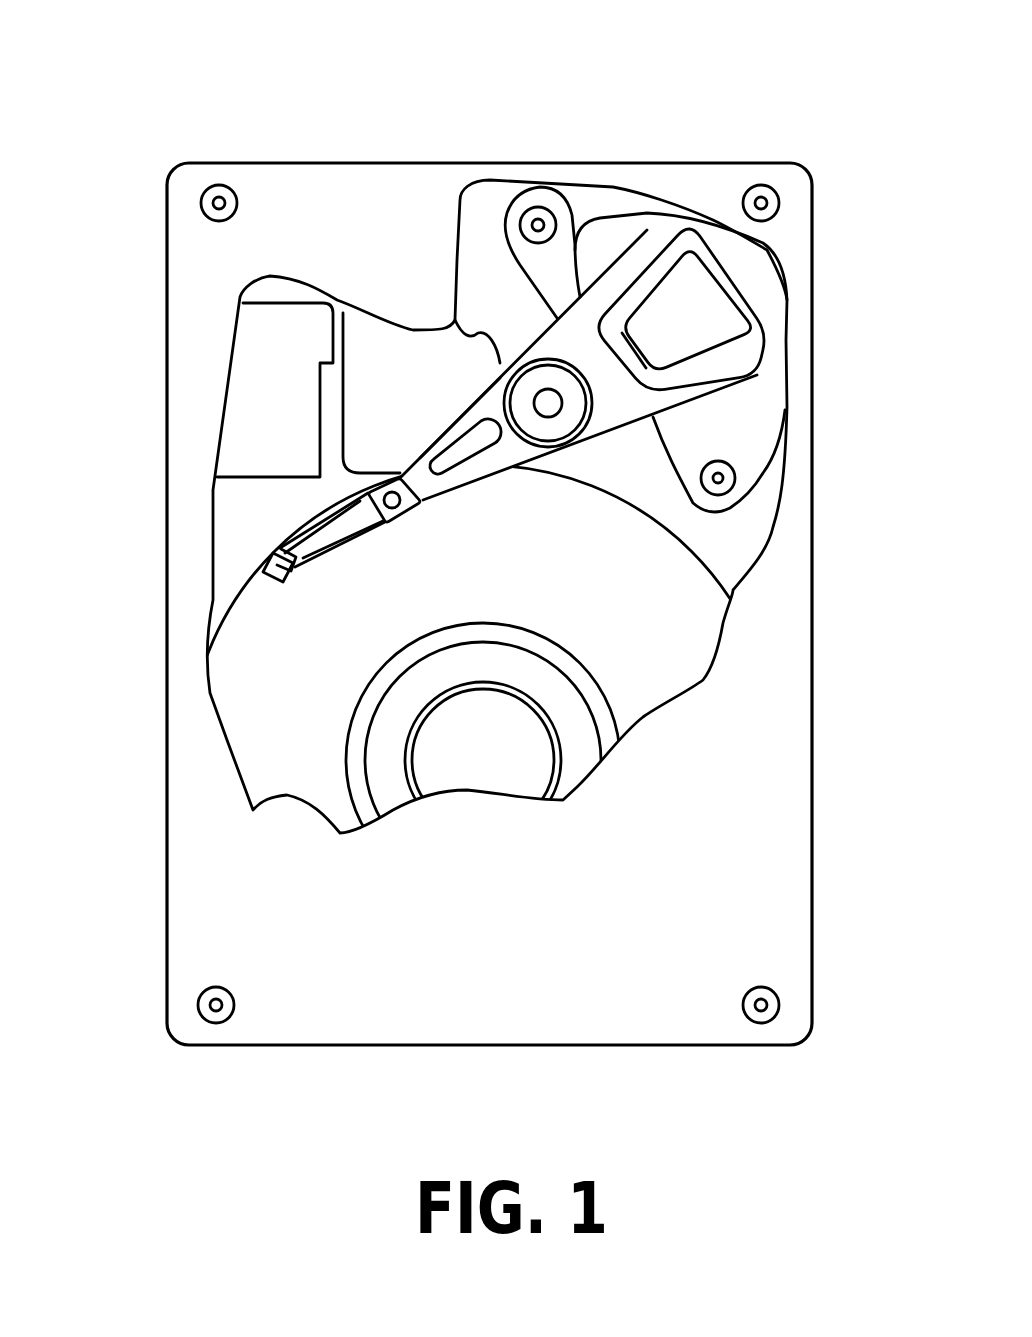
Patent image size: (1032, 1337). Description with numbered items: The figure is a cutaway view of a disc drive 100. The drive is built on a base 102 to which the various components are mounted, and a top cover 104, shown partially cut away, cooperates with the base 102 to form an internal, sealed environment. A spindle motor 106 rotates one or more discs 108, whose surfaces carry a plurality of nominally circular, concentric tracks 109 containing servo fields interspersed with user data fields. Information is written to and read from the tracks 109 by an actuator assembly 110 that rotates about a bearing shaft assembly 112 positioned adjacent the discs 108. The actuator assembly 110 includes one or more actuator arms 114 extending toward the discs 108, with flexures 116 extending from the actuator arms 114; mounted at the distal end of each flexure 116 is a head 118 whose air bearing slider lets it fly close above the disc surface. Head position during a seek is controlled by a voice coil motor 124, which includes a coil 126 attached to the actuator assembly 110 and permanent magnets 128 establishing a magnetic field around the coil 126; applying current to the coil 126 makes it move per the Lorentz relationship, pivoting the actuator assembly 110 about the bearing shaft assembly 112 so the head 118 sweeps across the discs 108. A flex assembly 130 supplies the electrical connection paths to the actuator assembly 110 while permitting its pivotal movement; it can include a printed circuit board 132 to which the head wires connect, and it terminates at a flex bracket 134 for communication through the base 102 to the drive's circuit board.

The disc drive 100 is at (222, 125).
The base 102 is at (247, 543).
The top cover 104 is at (222, 870).
The spindle motor 106 is at (485, 765).
The discs 108 is at (670, 667).
The tracks 109 is at (360, 752).
The actuator assembly 110 is at (525, 468).
The bearing shaft assembly 112 is at (565, 410).
The actuator arms 114 is at (473, 470).
The flexures 116 is at (332, 538).
The head 118 is at (273, 577).
The voice coil motor 124 is at (586, 182).
The coil 126 is at (753, 307).
The permanent magnets 128 is at (583, 257).
The flex assembly 130 is at (453, 400).
The printed circuit board 132 is at (497, 362).
The flex bracket 134 is at (263, 403).